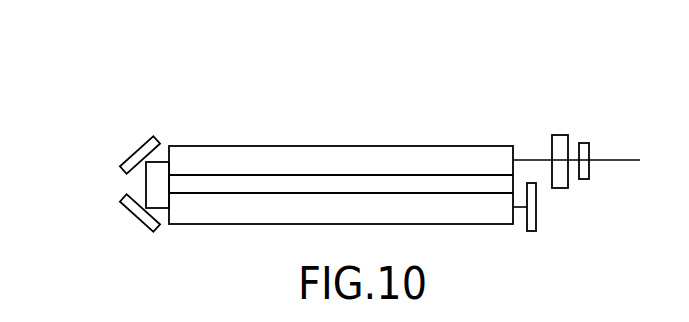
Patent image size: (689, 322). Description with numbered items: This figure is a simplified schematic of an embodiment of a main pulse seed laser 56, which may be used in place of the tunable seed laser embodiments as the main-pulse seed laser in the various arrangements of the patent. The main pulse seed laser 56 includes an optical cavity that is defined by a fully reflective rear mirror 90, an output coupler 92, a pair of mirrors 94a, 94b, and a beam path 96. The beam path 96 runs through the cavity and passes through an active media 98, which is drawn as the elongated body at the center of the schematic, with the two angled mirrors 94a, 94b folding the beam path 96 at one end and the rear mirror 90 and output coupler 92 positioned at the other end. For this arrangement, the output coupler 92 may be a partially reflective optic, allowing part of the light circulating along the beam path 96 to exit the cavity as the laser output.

The main pulse seed laser 56 is at (214, 73).
The active media 98 is at (393, 146).
The beam path 96 is at (146, 185).
The mirror 94a is at (135, 153).
The mirror 94b is at (135, 218).
The fully reflective rear mirror 90 is at (536, 219).
The output coupler 92 is at (584, 143).